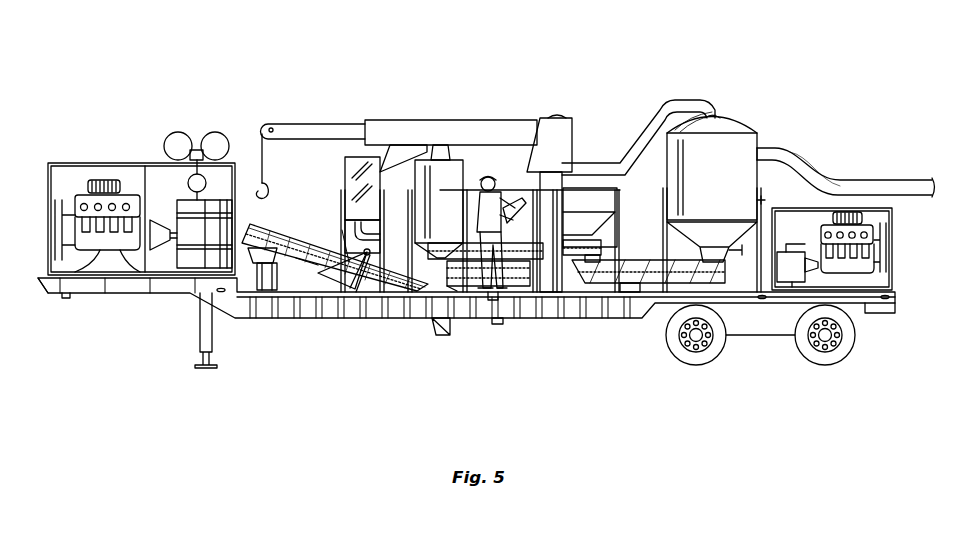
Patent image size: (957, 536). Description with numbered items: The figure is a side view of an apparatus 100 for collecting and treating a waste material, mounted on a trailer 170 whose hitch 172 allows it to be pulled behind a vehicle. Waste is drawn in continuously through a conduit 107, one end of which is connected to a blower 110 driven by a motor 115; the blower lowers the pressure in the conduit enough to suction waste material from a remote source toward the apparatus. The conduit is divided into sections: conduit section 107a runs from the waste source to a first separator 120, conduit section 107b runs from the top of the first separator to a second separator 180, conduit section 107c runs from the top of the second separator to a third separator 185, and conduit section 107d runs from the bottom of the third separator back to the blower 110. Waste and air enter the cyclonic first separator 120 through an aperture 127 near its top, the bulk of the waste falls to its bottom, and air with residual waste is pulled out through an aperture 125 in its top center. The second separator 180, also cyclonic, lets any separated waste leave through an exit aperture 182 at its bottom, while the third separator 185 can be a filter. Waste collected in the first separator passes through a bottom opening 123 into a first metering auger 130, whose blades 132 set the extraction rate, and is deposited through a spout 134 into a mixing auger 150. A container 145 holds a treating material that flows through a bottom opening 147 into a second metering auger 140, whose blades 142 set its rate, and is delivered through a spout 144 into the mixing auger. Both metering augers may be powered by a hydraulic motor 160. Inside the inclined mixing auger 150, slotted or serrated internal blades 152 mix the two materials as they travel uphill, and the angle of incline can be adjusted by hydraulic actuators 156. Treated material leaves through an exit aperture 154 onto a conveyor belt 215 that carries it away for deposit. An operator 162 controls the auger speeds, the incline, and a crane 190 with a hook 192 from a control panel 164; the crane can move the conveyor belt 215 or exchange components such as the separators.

The apparatus 100 is at (128, 45).
The conduit 107 is at (880, 178).
The conduit section 107a is at (829, 172).
The conduit section 107b is at (575, 195).
The conduit section 107c is at (402, 157).
The conduit section 107d is at (293, 232).
The blower 110 is at (217, 197).
The motor 115 is at (130, 197).
The first separator 120 is at (750, 128).
The bottom opening 123 is at (735, 298).
The aperture 125 is at (718, 114).
The aperture 127 is at (762, 141).
The first metering auger 130 is at (638, 286).
The blades 132 is at (592, 262).
The spout 134 is at (493, 300).
The second metering auger 140 is at (497, 320).
The blades 142 is at (437, 260).
The spout 144 is at (418, 262).
The container 145 is at (585, 185).
The bottom opening 147 is at (603, 234).
The mixing auger 150 is at (291, 255).
The internal blades 152 is at (349, 262).
The exit aperture 154 is at (317, 268).
The hydraulic actuators 156 is at (363, 283).
The hydraulic motor 160 is at (863, 223).
The operator 162 is at (512, 160).
The control panel 164 is at (507, 224).
The trailer 170 is at (122, 295).
The hitch 172 is at (66, 300).
The second separator 180 is at (461, 165).
The exit aperture 182 is at (440, 332).
The third separator 185 is at (353, 157).
The crane 190 is at (565, 118).
The hook 192 is at (251, 190).
The conveyor belt 215 is at (262, 270).